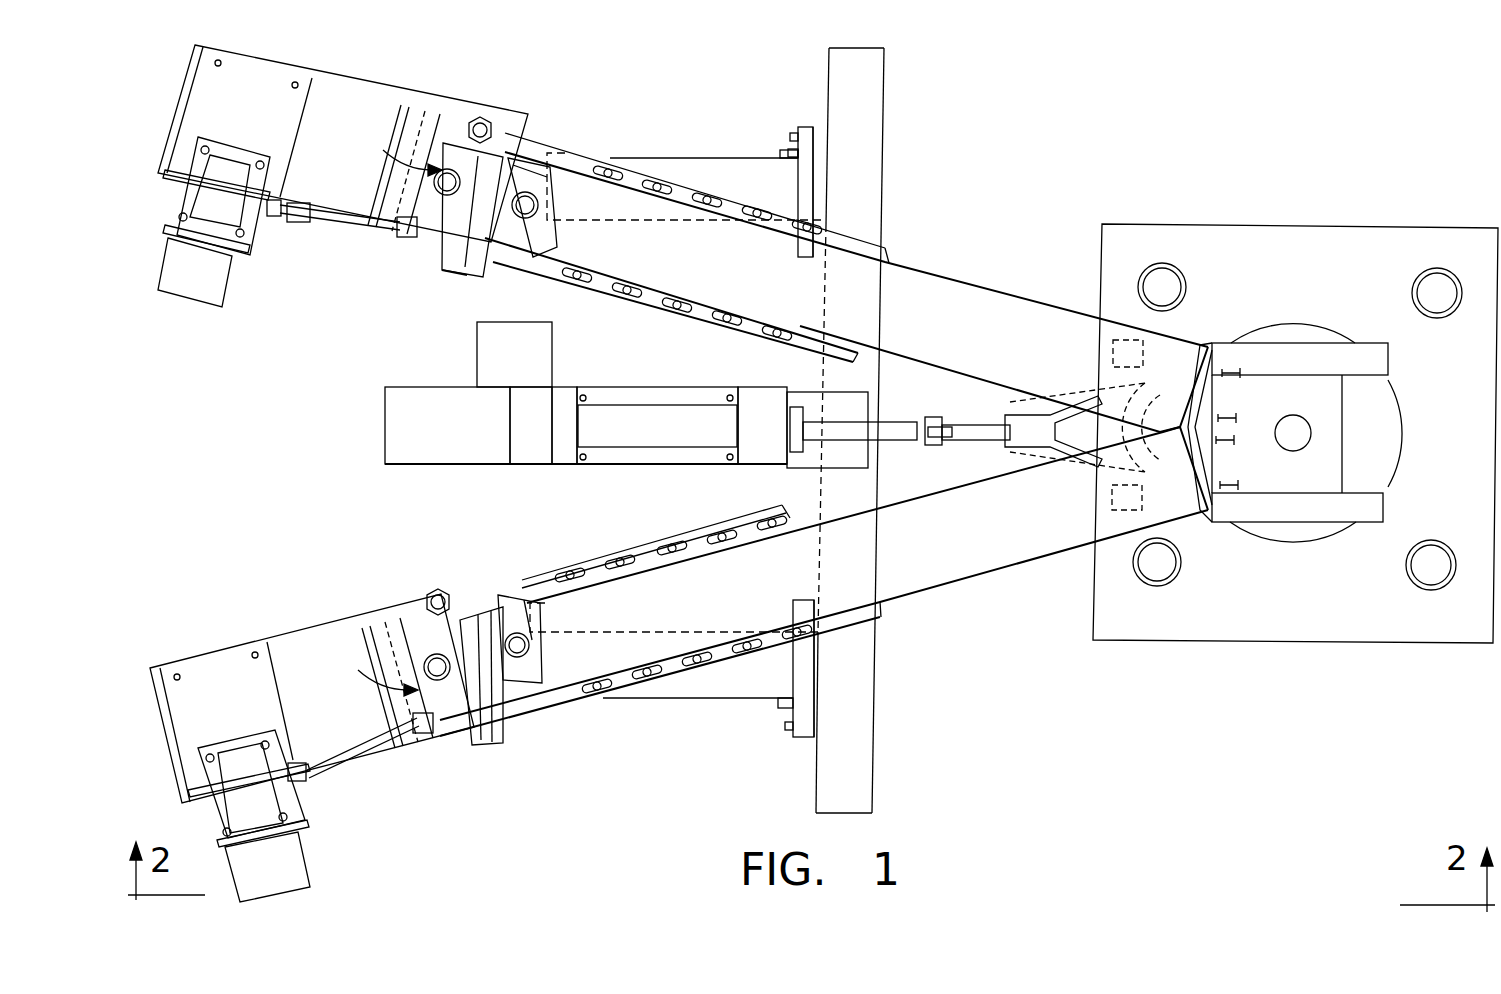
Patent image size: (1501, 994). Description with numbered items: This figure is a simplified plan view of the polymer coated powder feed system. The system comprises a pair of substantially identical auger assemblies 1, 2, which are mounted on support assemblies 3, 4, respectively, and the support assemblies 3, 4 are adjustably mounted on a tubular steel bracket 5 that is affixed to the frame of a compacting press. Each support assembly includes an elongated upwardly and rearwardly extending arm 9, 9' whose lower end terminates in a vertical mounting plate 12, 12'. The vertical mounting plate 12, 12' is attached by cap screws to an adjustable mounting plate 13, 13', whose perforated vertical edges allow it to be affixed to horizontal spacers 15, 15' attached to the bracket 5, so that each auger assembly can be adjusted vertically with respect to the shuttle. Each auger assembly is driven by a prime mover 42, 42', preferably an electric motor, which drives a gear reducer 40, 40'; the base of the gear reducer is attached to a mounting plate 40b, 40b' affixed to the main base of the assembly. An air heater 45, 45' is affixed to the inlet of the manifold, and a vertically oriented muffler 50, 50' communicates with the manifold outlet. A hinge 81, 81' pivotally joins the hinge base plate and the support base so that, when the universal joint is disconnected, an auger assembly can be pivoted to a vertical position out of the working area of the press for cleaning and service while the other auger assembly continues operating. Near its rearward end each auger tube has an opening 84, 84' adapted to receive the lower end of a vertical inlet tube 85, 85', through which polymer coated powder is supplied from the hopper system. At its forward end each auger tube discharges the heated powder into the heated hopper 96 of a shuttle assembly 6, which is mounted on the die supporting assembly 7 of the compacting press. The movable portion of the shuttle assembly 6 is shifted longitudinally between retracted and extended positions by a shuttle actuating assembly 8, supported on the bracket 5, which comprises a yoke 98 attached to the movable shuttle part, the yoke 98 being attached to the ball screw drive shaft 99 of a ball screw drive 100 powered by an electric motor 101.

The auger assembly 1 is at (670, 675).
The auger assembly 2 is at (656, 303).
The support assembly 3 is at (705, 722).
The support assembly 4 is at (650, 142).
The tubular steel bracket 5 is at (870, 75).
The shuttle assembly 6 is at (1277, 512).
The die supporting assembly 7 is at (1265, 240).
The shuttle actuating assembly 8 is at (637, 478).
The arm 9 is at (824, 630).
The arm 9' is at (856, 205).
The vertical mounting plate 12 is at (698, 743).
The vertical mounting plate 12' is at (704, 116).
The adjustable mounting plate 13 is at (788, 703).
The adjustable mounting plate 13' is at (797, 159).
The horizontal spacers 15 is at (865, 668).
The horizontal spacers 15' is at (879, 192).
The gear reducer 40 is at (247, 772).
The gear reducer 40' is at (206, 166).
The mounting plate 40b is at (312, 698).
The mounting plate 40b' is at (343, 143).
The prime mover 42 is at (293, 867).
The prime mover 42' is at (228, 297).
The air heater 45 is at (375, 722).
The air heater 45' is at (363, 227).
The muffler 50 is at (406, 572).
The muffler 50' is at (450, 101).
The hinge 81 is at (370, 650).
The hinge 81' is at (387, 169).
The opening 84 is at (505, 700).
The opening 84' is at (467, 229).
The vertical inlet tube 85 is at (520, 611).
The inlet tube 85' is at (539, 174).
The heated hopper 96 is at (1045, 388).
The yoke 98 is at (985, 428).
The ball screw drive shaft 99 is at (808, 442).
The ball screw drive 100 is at (645, 412).
The electric motor 101 is at (455, 450).